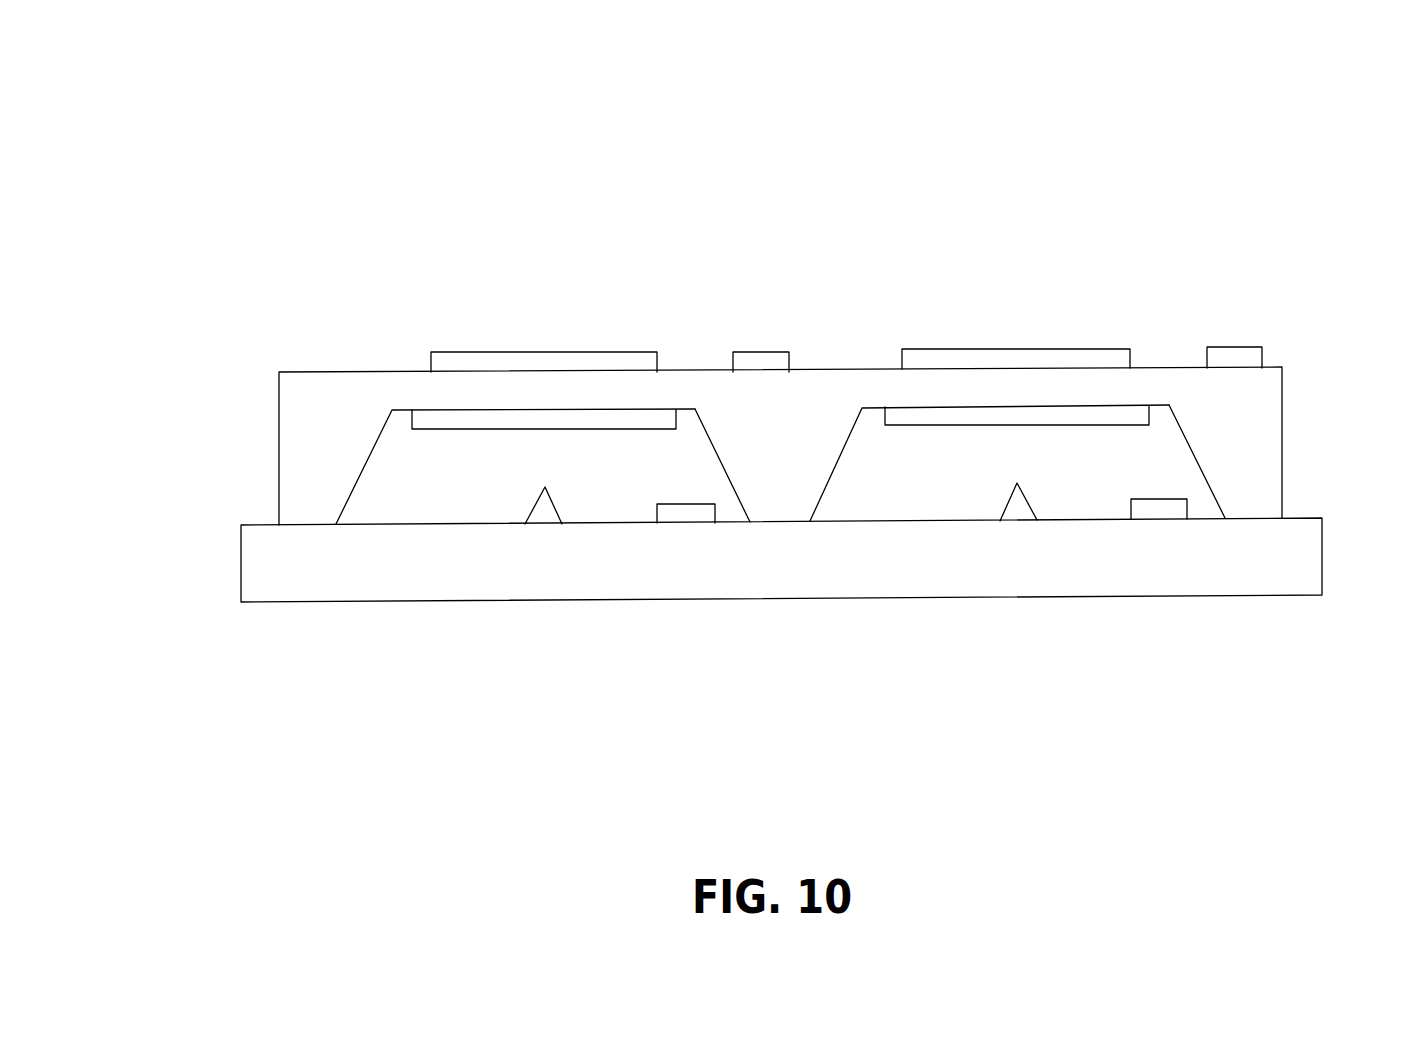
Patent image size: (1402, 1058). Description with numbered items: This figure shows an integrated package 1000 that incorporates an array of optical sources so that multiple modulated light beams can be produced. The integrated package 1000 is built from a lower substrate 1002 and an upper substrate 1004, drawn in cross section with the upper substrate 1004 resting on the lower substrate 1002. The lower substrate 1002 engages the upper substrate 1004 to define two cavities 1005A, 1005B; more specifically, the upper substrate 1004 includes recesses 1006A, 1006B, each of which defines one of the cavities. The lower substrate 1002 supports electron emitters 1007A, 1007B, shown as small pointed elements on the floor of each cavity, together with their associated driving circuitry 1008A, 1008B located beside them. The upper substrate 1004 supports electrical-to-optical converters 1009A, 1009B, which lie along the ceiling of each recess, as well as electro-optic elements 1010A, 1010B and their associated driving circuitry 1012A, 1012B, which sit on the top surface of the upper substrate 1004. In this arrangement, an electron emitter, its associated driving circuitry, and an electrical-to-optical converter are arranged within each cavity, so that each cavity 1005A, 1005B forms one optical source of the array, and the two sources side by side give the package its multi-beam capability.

The integrated package 1000 is at (167, 157).
The lower substrate 1002 is at (240, 577).
The upper substrate 1004 is at (392, 372).
The cavity 1005A is at (698, 477).
The cavity 1005B is at (1168, 480).
The recess 1006A is at (383, 483).
The recess 1006B is at (856, 478).
The electron emitter 1007A is at (540, 498).
The electron emitter 1007B is at (1009, 494).
The driving circuitry 1008A is at (673, 504).
The driving circuitry 1008B is at (1152, 499).
The electrical-to-optical converter 1009A is at (462, 429).
The electrical-to-optical converter 1009B is at (944, 426).
The electro-optic element 1010A is at (563, 352).
The electro-optic element 1010B is at (1037, 349).
The driving circuitry 1012A is at (750, 352).
The driving circuitry 1012B is at (1243, 347).